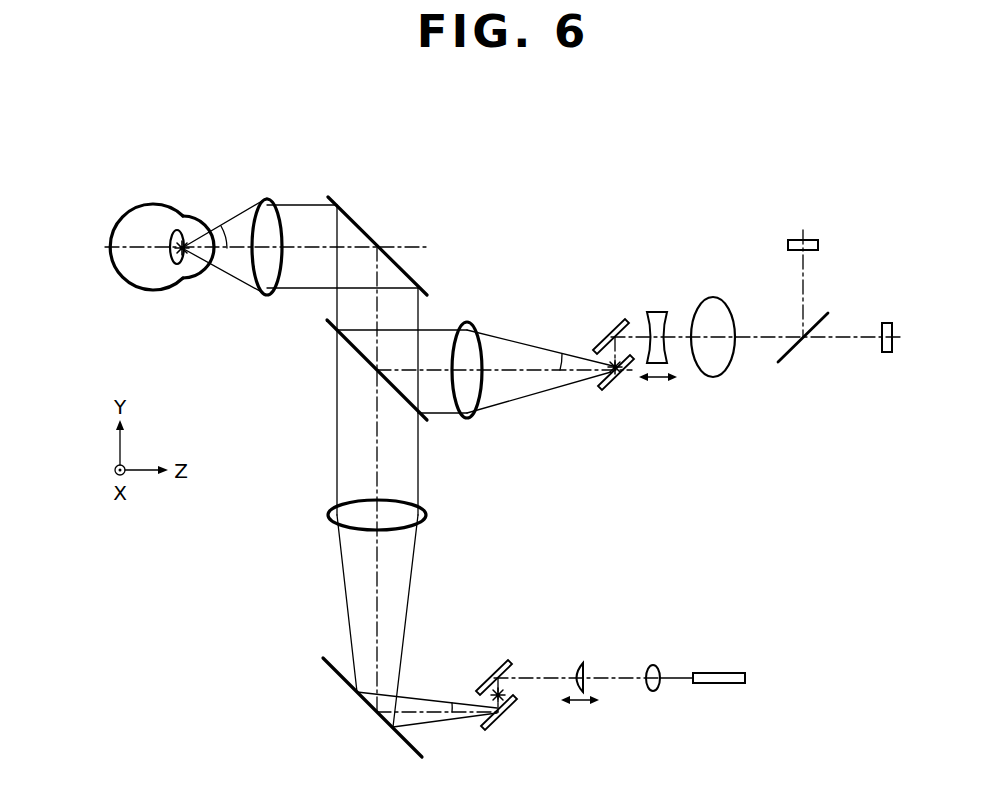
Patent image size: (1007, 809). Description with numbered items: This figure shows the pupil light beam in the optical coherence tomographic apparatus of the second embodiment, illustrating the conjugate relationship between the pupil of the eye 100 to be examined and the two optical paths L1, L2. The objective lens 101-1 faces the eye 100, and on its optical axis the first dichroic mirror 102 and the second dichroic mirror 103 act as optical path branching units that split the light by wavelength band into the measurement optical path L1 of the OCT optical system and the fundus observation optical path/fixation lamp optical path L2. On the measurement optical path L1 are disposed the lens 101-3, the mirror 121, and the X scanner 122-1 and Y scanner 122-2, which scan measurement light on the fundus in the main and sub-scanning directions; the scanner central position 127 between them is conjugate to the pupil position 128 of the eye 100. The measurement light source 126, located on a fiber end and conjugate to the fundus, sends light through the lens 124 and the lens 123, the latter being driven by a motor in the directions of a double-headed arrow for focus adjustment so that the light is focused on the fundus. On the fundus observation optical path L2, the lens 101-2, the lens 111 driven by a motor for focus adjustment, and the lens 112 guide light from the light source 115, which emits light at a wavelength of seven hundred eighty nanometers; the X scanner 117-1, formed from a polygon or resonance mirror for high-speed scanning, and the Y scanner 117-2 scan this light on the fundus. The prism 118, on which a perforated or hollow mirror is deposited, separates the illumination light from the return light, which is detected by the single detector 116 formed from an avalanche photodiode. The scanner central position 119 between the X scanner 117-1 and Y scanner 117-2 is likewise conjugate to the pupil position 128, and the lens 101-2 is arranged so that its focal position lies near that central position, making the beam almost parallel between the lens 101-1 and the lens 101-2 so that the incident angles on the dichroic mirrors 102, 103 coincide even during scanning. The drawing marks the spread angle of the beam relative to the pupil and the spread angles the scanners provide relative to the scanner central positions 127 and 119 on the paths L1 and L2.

The eye to be examined 100 is at (152, 203).
The pupil position 128 is at (172, 262).
The objective lens 101-1 is at (269, 198).
The lens 101-2 is at (467, 322).
The lens 101-3 is at (329, 515).
The first dichroic mirror 102 is at (345, 212).
The second dichroic mirror 103 is at (327, 323).
The lens 111 is at (657, 312).
The lens 112 is at (717, 297).
The light source 115 is at (885, 323).
The detector 116 is at (815, 240).
The X scanner 117-1 is at (613, 390).
The Y scanner 117-2 is at (615, 325).
The prism 118 is at (787, 363).
The scanner central position 119 is at (597, 350).
The mirror 121 is at (332, 672).
The X scanner 122-1 is at (497, 728).
The Y scanner 122-2 is at (508, 663).
The lens 123 is at (583, 660).
The lens 124 is at (653, 667).
The measurement light source 126 is at (720, 672).
The scanner central position 127 is at (506, 693).
The measurement optical path L1 is at (375, 595).
The fundus observation optical path/fixation lamp optical path L2 is at (528, 373).